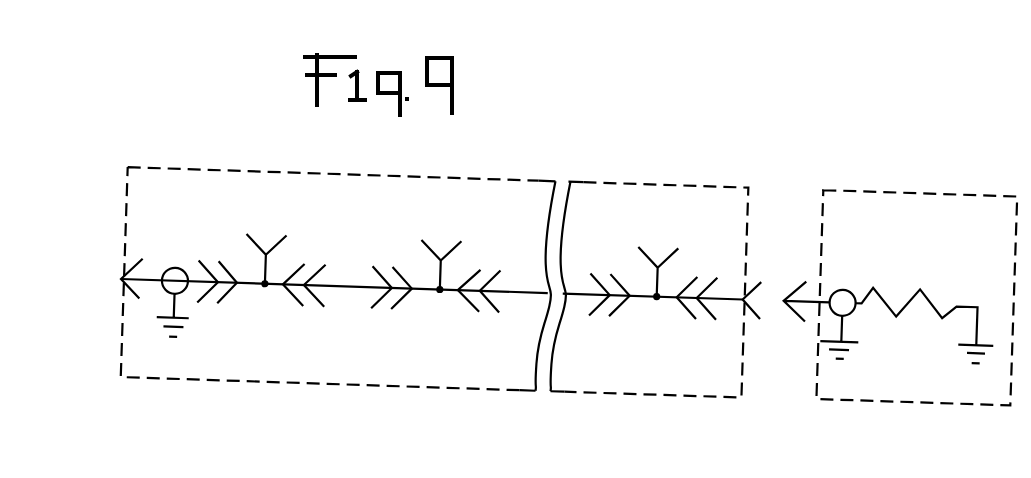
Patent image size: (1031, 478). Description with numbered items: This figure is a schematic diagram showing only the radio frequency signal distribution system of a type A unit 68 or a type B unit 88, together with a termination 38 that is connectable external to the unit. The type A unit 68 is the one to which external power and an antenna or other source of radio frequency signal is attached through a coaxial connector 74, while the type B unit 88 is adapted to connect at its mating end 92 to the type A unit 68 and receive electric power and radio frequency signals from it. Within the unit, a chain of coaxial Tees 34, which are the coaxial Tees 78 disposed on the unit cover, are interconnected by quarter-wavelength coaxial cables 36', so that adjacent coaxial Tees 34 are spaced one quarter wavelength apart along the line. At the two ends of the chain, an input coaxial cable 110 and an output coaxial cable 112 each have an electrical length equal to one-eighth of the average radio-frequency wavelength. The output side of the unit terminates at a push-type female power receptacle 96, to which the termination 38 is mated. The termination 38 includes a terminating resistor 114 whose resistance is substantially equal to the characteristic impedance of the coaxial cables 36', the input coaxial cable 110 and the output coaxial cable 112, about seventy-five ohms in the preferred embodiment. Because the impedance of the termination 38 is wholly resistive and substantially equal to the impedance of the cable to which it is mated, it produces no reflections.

The coaxial Tees 34 is at (440, 279).
The quarter-wavelength coaxial cables 36' is at (432, 285).
The termination 38 is at (899, 267).
The type A unit 68 is at (436, 252).
The coaxial connector 74 is at (92, 296).
The coaxial Tees 78 is at (430, 240).
The type B unit 88 is at (520, 167).
The mating end 92 is at (133, 283).
The push-type female power receptacle 96 is at (759, 263).
The input coaxial cable 110 is at (153, 277).
The output coaxial cable 112 is at (724, 279).
The terminating resistor 114 is at (886, 276).